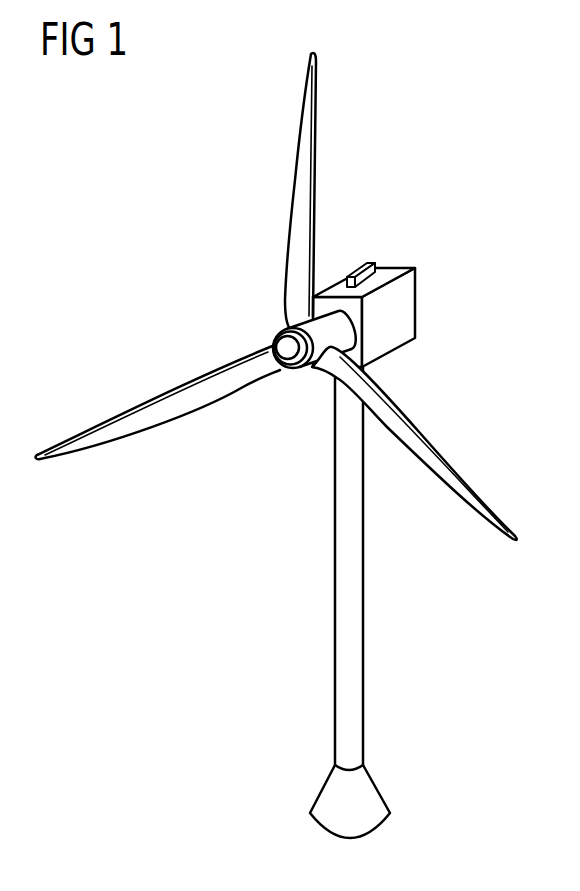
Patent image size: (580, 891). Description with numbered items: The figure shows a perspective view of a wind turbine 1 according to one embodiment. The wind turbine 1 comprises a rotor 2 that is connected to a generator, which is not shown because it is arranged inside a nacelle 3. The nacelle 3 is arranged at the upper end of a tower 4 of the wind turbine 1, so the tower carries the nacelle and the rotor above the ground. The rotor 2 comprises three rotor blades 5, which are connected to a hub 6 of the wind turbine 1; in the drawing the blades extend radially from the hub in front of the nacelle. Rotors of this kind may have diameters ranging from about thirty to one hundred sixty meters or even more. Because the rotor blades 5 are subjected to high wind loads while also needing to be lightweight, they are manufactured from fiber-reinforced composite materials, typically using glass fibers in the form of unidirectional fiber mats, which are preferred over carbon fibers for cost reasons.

The wind turbine 1 is at (109, 180).
The rotor 2 is at (95, 403).
The nacelle 3 is at (405, 293).
The tower 4 is at (352, 645).
The rotor blade 5 is at (303, 197).
The hub 6 is at (338, 327).